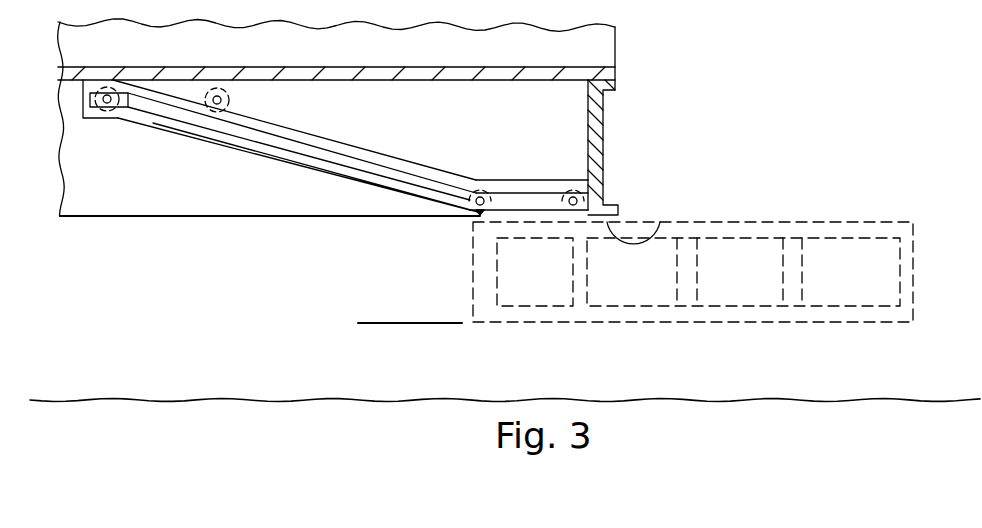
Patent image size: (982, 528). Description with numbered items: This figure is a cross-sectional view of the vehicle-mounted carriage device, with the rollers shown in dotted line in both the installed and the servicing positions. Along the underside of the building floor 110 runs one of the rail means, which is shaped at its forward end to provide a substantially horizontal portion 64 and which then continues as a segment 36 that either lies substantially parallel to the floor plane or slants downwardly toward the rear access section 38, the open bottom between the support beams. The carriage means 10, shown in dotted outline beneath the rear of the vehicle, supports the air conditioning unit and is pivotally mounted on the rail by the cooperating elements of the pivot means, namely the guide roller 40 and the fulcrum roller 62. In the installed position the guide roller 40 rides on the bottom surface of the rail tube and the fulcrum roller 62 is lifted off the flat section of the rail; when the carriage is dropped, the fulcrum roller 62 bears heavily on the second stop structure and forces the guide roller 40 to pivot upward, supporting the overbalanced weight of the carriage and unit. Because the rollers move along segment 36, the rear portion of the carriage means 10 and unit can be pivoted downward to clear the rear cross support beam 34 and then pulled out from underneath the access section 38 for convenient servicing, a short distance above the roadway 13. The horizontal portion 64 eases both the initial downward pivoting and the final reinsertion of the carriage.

The building floor 110 is at (587, 64).
The rail segment 36 is at (353, 146).
The substantially horizontal portion 64 is at (98, 120).
The guide roller 40 is at (112, 84).
The fulcrum roller 62 is at (228, 96).
The carriage means 10 is at (758, 224).
The rear access section 38 is at (601, 281).
The rear cross support beam 34 is at (660, 222).
The roadway 13 is at (425, 399).